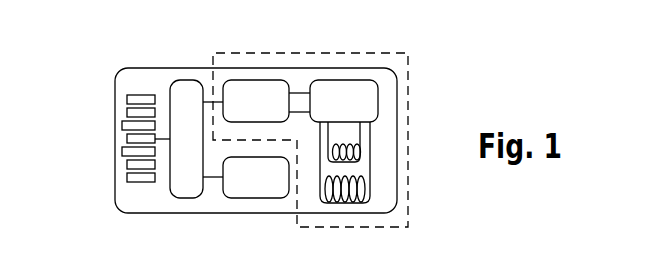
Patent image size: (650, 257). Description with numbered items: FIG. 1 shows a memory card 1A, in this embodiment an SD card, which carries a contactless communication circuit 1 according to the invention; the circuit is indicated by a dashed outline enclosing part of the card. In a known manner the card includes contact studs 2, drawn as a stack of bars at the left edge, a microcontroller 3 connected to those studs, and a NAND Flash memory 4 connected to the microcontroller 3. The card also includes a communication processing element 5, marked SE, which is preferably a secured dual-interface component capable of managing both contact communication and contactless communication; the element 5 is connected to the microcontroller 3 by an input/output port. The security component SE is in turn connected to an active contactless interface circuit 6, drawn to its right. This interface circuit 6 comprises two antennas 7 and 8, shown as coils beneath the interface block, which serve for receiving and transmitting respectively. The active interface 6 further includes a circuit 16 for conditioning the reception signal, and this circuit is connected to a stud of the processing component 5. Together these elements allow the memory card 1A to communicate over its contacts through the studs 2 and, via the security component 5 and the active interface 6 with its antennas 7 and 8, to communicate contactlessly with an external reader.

The memory card 1A is at (121, 51).
The contactless communication circuit 1 is at (408, 112).
The contact studs 2 is at (126, 127).
The microcontroller 3 is at (184, 90).
The Flash memory 4 is at (252, 192).
The communication processing element 5 is at (256, 85).
The active CL interface circuit 6 is at (347, 97).
The receiving antenna 7 is at (355, 152).
The transmitting antenna 8 is at (363, 193).
The reception signal conditioning circuit 16 is at (428, 256).